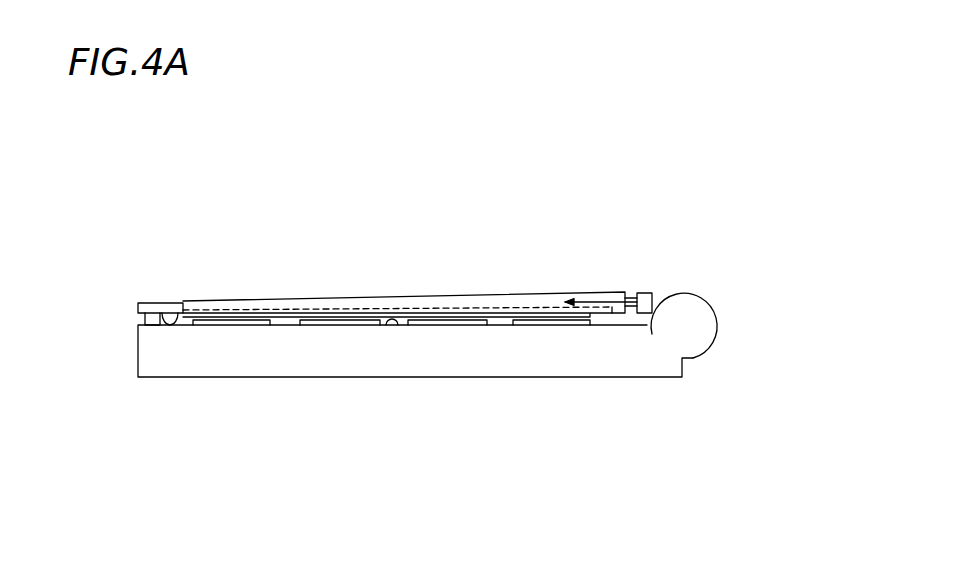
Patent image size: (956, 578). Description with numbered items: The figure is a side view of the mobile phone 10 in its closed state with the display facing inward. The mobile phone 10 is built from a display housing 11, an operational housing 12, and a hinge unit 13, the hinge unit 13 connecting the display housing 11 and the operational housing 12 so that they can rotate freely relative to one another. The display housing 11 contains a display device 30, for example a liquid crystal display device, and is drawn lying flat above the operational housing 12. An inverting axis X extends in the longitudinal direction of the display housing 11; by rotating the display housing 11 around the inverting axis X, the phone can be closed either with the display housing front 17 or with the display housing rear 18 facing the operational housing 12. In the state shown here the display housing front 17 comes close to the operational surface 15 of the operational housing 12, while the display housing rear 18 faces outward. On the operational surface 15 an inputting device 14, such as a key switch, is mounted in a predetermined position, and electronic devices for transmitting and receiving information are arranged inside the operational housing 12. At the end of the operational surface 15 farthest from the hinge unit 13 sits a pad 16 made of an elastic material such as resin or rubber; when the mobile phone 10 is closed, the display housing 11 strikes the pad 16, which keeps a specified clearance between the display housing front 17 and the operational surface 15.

The mobile phone 10 is at (444, 298).
The display housing 11 is at (398, 226).
The operational housing 12 is at (618, 363).
The hinge unit 13 is at (710, 318).
The inputting device 14 is at (238, 327).
The operational surface 15 is at (400, 327).
The pad 16 is at (146, 318).
The display housing front 17 is at (157, 312).
The display housing rear 18 is at (147, 302).
The display device 30 is at (291, 308).
The inverting axis X is at (617, 270).